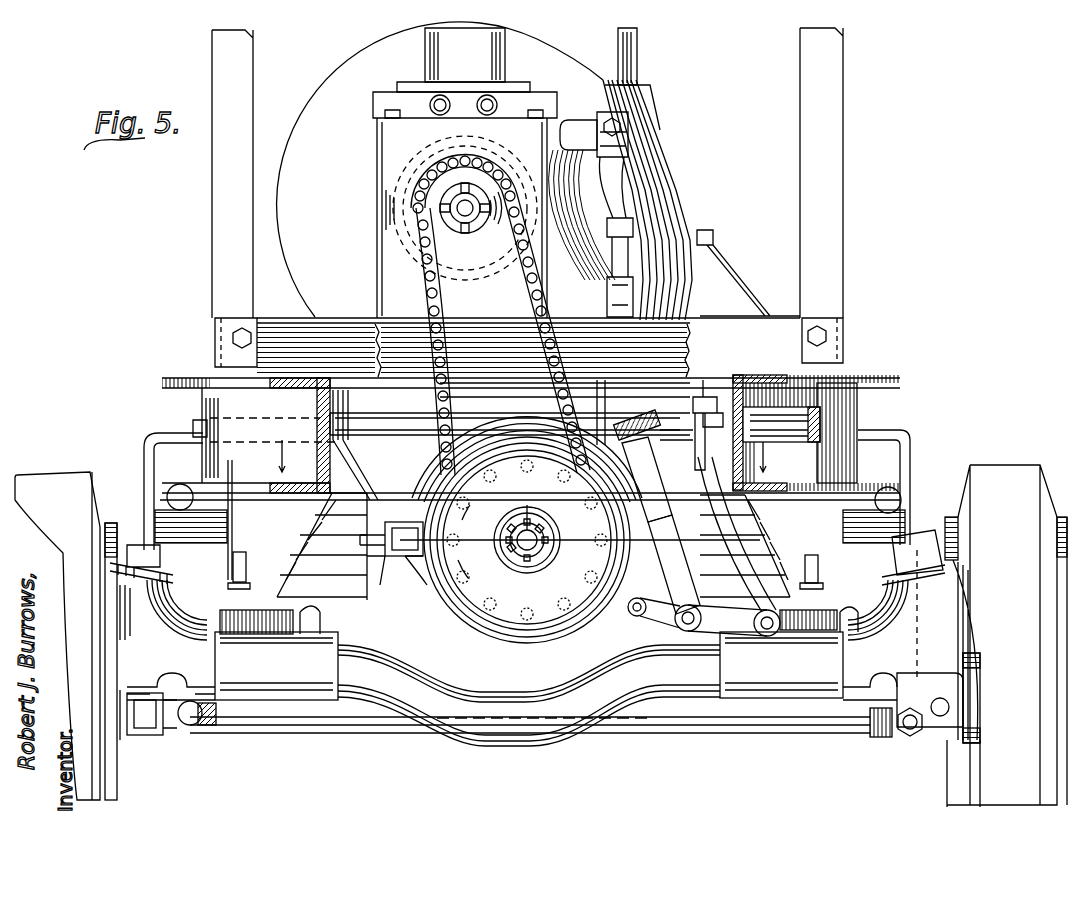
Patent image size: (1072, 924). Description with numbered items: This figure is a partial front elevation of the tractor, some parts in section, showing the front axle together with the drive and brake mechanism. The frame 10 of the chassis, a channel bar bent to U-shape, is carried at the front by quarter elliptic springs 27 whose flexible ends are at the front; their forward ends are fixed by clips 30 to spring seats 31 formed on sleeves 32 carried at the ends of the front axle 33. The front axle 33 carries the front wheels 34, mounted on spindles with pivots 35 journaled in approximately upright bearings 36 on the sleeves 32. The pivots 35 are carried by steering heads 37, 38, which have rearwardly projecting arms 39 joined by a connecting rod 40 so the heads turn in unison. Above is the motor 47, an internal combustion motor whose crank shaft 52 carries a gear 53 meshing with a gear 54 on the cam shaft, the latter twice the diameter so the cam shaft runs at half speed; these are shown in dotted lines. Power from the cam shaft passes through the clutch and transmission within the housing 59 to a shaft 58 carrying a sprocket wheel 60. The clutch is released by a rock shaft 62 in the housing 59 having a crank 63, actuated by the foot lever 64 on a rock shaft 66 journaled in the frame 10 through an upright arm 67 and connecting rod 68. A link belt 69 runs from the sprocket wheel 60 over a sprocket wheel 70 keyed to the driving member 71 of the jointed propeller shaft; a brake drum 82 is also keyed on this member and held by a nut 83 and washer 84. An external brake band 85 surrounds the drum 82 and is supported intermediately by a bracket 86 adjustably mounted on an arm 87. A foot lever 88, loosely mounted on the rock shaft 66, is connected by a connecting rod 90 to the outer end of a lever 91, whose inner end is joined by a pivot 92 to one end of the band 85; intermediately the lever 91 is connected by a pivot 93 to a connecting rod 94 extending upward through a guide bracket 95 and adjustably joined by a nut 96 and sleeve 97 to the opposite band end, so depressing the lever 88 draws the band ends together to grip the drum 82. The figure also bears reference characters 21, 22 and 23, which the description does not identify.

The frame 10 is at (214, 392).
The hanger bolt 21 is at (168, 493).
The spring hanger bracket 22 is at (152, 438).
The spring clip 23 is at (233, 556).
The quarter elliptic springs 27 is at (294, 558).
The clips 30 is at (300, 622).
The spring seats 31 is at (325, 628).
The sleeves 32 is at (333, 680).
The front axle 33 is at (550, 710).
The front wheels 34 is at (103, 792).
The pivots 35 is at (143, 547).
The upright bearings 36 is at (143, 613).
The steering head 37 is at (940, 733).
The steering head 38 is at (128, 740).
The rearwardly projecting arms 39 is at (190, 728).
The connecting rod 40 is at (263, 731).
The motor 47 is at (648, 73).
The crank shaft 52 is at (548, 282).
The gear 53 is at (540, 180).
The gear 54 is at (395, 218).
The shaft 58 is at (447, 220).
The housing 59 is at (371, 200).
The sprocket wheel 60 is at (447, 250).
The rock shaft 62 is at (628, 128).
The crank 63 is at (622, 190).
The foot lever 64 is at (818, 428).
The rock shaft 66 is at (384, 425).
The upright arm 67 is at (612, 382).
The connecting rod 68 is at (622, 258).
The link belt 69 is at (426, 293).
The sprocket wheel 70 is at (580, 540).
The driving member 71 is at (520, 547).
The brake drum 82 is at (472, 620).
The nut 83 is at (527, 557).
The washer 84 is at (545, 516).
The external brake band 85 is at (492, 640).
The bracket 86 is at (420, 575).
The arm 87 is at (397, 530).
The foot lever 88 is at (695, 412).
The connecting rod 90 is at (740, 550).
The lever 91 is at (682, 628).
The pivot 92 is at (648, 620).
The pivot 93 is at (760, 635).
The connecting rod 94 is at (742, 521).
The guide bracket 95 is at (632, 612).
The nut 96 is at (640, 418).
The sleeve 97 is at (654, 452).